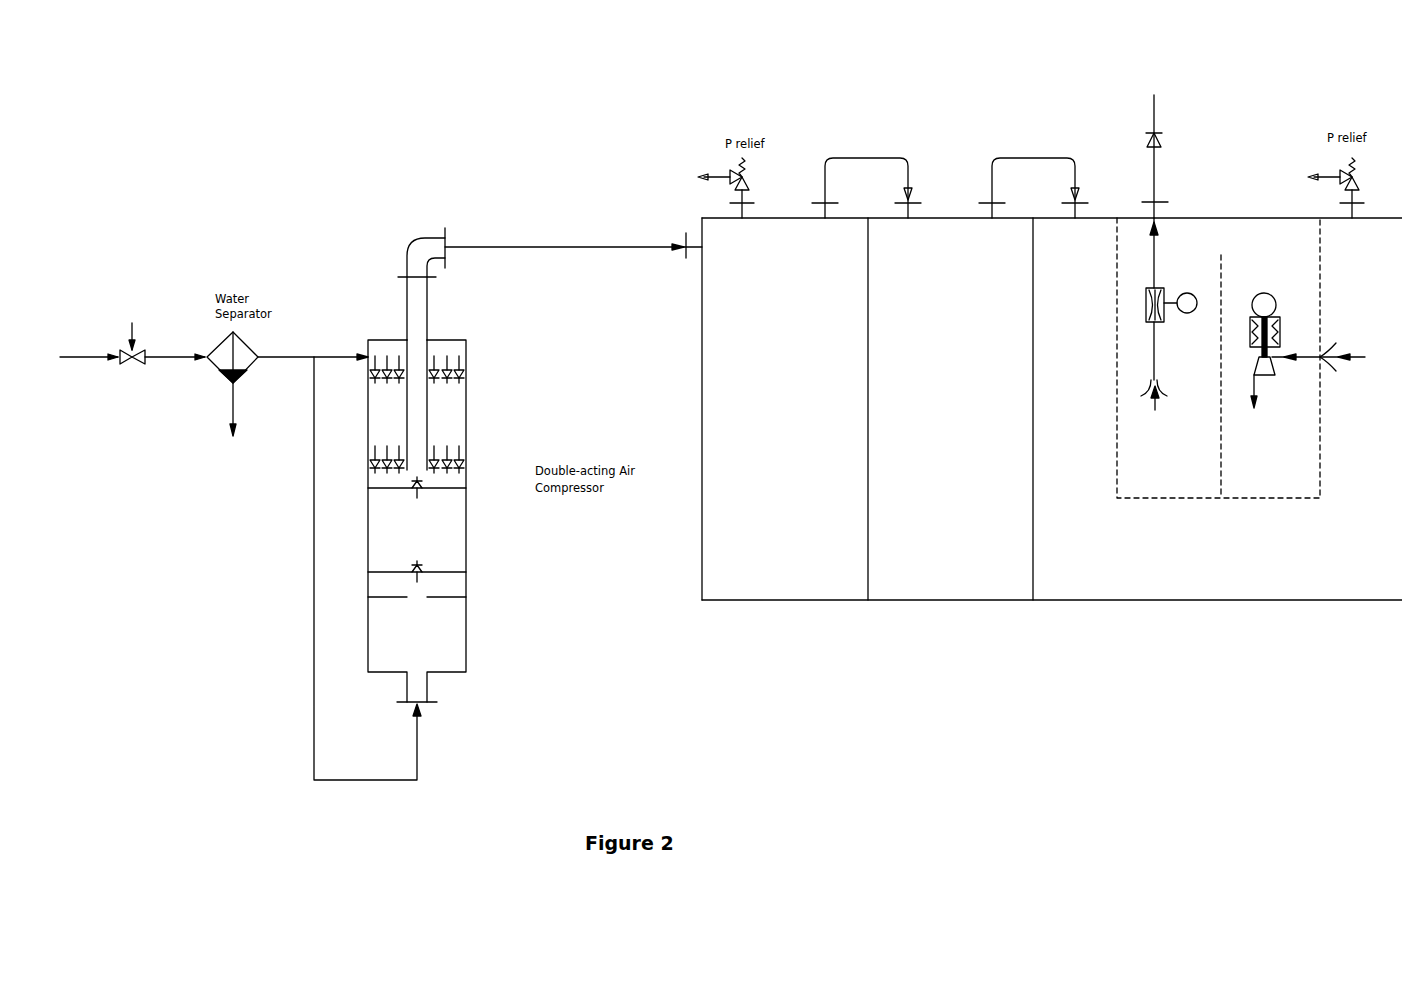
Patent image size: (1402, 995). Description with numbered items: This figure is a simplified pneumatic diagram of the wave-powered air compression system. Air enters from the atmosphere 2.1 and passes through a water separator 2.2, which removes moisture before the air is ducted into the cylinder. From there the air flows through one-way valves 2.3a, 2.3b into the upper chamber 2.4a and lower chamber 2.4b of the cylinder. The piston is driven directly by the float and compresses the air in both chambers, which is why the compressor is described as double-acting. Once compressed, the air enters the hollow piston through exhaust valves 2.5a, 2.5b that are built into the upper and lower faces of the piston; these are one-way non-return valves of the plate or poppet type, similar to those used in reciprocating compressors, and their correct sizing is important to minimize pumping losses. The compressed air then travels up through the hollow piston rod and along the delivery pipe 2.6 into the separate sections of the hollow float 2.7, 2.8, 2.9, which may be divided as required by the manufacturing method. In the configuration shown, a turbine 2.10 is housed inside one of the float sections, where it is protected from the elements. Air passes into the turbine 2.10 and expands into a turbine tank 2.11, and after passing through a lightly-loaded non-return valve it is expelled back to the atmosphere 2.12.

The atmosphere 2.1 is at (131, 361).
The water separator 2.2 is at (339, 550).
The one-way valve 2.3a is at (439, 373).
The upper chamber of cylinder 2.4a is at (439, 417).
The exhaust valve 2.5a is at (439, 457).
The exhaust valve 2.5b is at (438, 495).
The lower chamber of cylinder 2.4b is at (439, 530).
The one-way valve 2.3b is at (438, 581).
The stainless tube delivery pipe 2.6 is at (550, 273).
The float section 2.7 is at (813, 409).
The float section 2.8 is at (975, 409).
The float section 2.9 is at (1191, 402).
The turbine 2.10 is at (1311, 350).
The turbine tank 2.11 is at (1172, 338).
The atmosphere 2.12 is at (1215, 137).